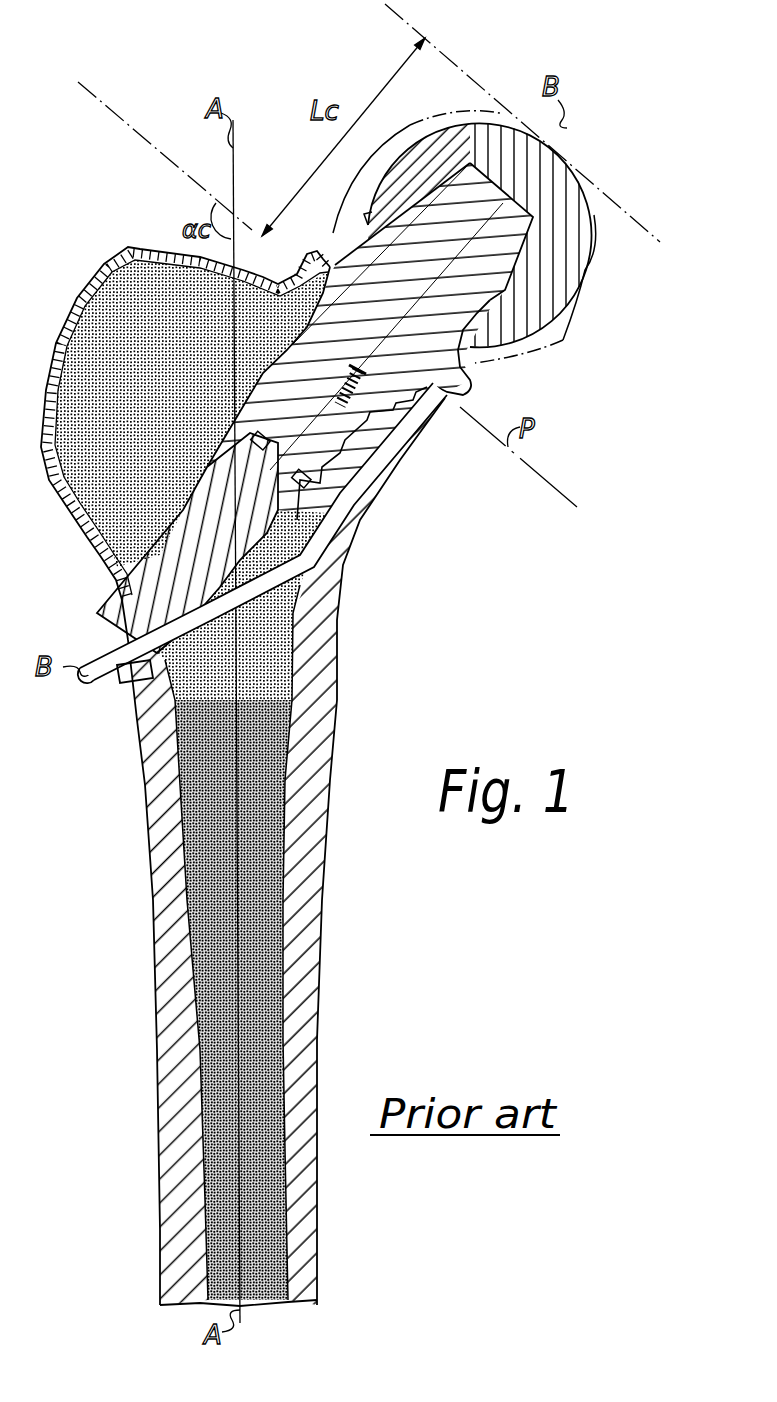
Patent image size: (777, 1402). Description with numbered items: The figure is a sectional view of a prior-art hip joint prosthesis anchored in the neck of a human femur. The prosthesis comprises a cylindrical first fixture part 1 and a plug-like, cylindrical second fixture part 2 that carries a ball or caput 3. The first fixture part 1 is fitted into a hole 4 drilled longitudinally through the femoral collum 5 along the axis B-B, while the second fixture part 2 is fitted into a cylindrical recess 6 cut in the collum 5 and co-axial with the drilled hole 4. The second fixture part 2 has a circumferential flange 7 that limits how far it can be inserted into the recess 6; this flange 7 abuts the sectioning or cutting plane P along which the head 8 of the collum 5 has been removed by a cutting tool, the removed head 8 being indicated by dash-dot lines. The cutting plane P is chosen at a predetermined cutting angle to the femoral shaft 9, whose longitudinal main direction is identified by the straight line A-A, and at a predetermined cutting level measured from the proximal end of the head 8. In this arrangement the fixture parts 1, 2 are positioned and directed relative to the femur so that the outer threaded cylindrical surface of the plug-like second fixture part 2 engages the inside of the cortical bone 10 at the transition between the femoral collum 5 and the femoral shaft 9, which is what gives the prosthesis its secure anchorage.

The first fixture part 1 is at (103, 620).
The second fixture part 2 is at (397, 453).
The caput 3 is at (597, 264).
The hole 4 is at (137, 673).
The femoral collum 5 is at (420, 428).
The cylindrical recess 6 is at (350, 473).
The circumferential flange 7 is at (473, 393).
The head 8 is at (582, 320).
The femoral shaft 9 is at (318, 935).
The cortical bone 10 is at (343, 565).